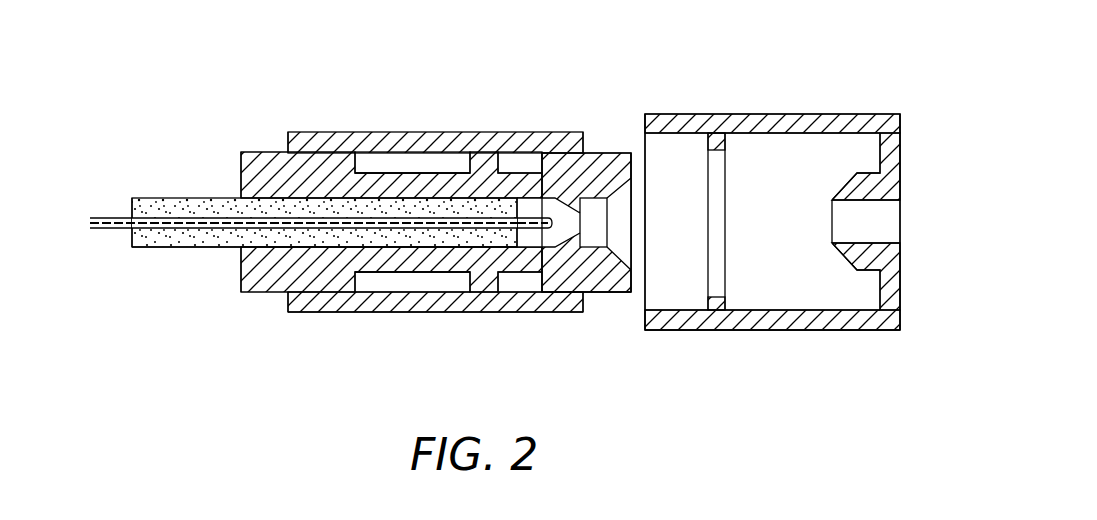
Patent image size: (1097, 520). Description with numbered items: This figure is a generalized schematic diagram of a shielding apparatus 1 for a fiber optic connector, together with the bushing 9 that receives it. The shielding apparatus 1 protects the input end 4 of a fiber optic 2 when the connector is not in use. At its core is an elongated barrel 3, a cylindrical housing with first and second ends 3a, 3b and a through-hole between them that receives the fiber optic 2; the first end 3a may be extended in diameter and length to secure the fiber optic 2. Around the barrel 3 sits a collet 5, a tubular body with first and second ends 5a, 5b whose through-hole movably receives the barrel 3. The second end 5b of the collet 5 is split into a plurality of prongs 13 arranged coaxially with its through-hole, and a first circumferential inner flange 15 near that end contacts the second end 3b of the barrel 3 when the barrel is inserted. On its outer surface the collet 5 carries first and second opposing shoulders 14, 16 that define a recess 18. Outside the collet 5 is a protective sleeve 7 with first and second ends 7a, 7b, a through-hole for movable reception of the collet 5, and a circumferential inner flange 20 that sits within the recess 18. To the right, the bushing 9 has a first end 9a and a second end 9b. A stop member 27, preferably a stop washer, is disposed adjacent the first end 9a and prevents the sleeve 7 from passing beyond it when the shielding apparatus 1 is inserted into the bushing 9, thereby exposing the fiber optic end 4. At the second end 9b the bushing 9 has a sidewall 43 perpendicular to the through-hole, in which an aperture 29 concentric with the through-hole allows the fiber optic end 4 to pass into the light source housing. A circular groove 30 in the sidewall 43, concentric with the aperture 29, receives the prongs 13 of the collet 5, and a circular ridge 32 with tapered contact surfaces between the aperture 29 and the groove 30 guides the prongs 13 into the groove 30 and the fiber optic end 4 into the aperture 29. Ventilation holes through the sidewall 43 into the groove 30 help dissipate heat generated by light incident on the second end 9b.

The shielding apparatus 1 is at (327, 343).
The fiber optic 2 is at (187, 222).
The elongated barrel 3 is at (170, 203).
The first end of barrel 3a is at (139, 182).
The second end of barrel 3b is at (396, 252).
The input end of fiber optic 4 is at (535, 234).
The collet 5 is at (313, 158).
The first end of collet 5a is at (236, 306).
The second end of collet 5b is at (618, 307).
The protective sleeve 7 is at (463, 142).
The first end of protective sleeve 7a is at (285, 131).
The second end of protective sleeve 7b is at (715, 57).
The bushing 9 is at (765, 103).
The first end of bushing 9a is at (676, 345).
The second end of bushing 9b is at (872, 345).
The prongs 13 is at (628, 247).
The first shoulder 14 is at (349, 162).
The first circumferential inner flange 15 is at (578, 249).
The second shoulder 16 is at (533, 152).
The recess 18 is at (407, 170).
The circumferential inner flange 20 is at (497, 168).
The stop member 27 is at (716, 300).
The aperture 29 is at (860, 223).
The circular groove 30 is at (866, 161).
The circular ridge 32 is at (846, 254).
The sidewall 43 is at (909, 119).